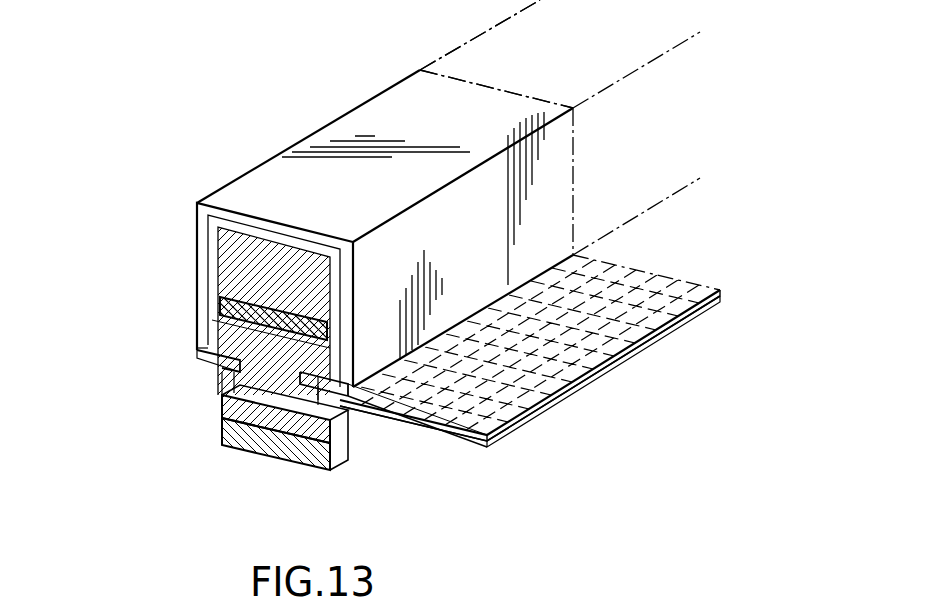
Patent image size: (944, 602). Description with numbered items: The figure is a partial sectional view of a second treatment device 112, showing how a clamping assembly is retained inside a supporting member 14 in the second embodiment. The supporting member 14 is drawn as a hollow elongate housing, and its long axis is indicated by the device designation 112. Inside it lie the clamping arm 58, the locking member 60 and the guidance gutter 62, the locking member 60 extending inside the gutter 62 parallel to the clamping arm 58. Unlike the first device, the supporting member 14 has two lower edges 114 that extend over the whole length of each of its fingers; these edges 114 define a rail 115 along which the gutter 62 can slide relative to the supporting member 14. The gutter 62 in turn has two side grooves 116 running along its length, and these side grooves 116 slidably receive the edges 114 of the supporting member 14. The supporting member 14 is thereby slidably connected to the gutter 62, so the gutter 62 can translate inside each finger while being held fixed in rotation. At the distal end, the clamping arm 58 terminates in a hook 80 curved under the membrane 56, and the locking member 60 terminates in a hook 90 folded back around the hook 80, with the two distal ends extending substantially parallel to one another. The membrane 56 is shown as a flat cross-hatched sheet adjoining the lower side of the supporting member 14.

The supporting member 14 is at (272, 128).
The second treatment device 112 is at (508, 70).
The clamping arm 58 is at (232, 248).
The locking member 60 is at (222, 304).
The guidance gutter 62 is at (205, 326).
The lower edges 114 is at (218, 354).
The rail 115 is at (212, 368).
The side grooves 116 is at (228, 372).
The hook 80 is at (415, 432).
The hook 90 is at (390, 420).
The membrane 56 is at (545, 368).